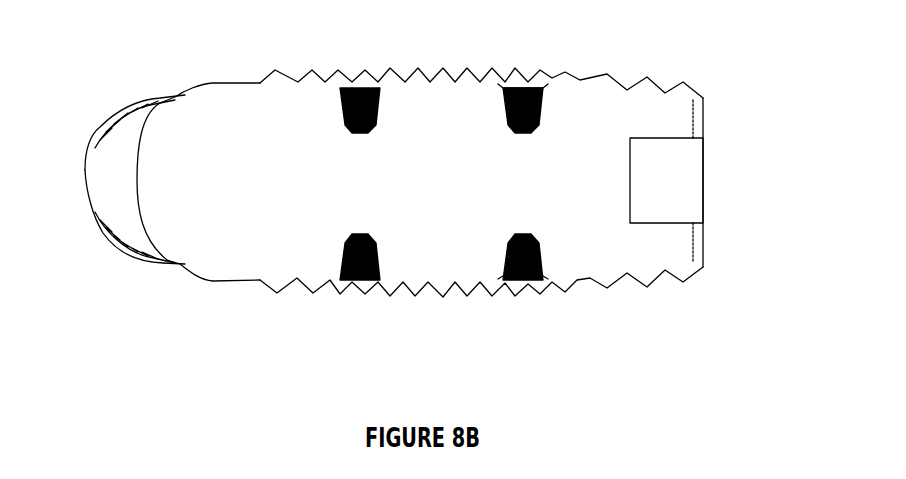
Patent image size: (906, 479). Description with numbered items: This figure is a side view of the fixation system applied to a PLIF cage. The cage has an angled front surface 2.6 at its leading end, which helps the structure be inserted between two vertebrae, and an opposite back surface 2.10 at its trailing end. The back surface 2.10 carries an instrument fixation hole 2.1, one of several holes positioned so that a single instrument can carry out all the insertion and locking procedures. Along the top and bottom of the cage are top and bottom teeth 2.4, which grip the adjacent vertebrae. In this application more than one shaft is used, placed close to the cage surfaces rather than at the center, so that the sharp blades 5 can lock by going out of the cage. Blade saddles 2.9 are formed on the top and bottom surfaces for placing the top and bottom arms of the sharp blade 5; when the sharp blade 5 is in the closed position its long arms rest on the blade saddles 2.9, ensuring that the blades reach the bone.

The instrument fixation hole 2.1 is at (660, 190).
The top and bottom teeth 2.4 is at (280, 290).
The angled front surface 2.6 is at (183, 263).
The blade saddle 2.9 is at (513, 84).
The back surface 2.10 is at (703, 120).
The sharp blade 5 is at (352, 93).